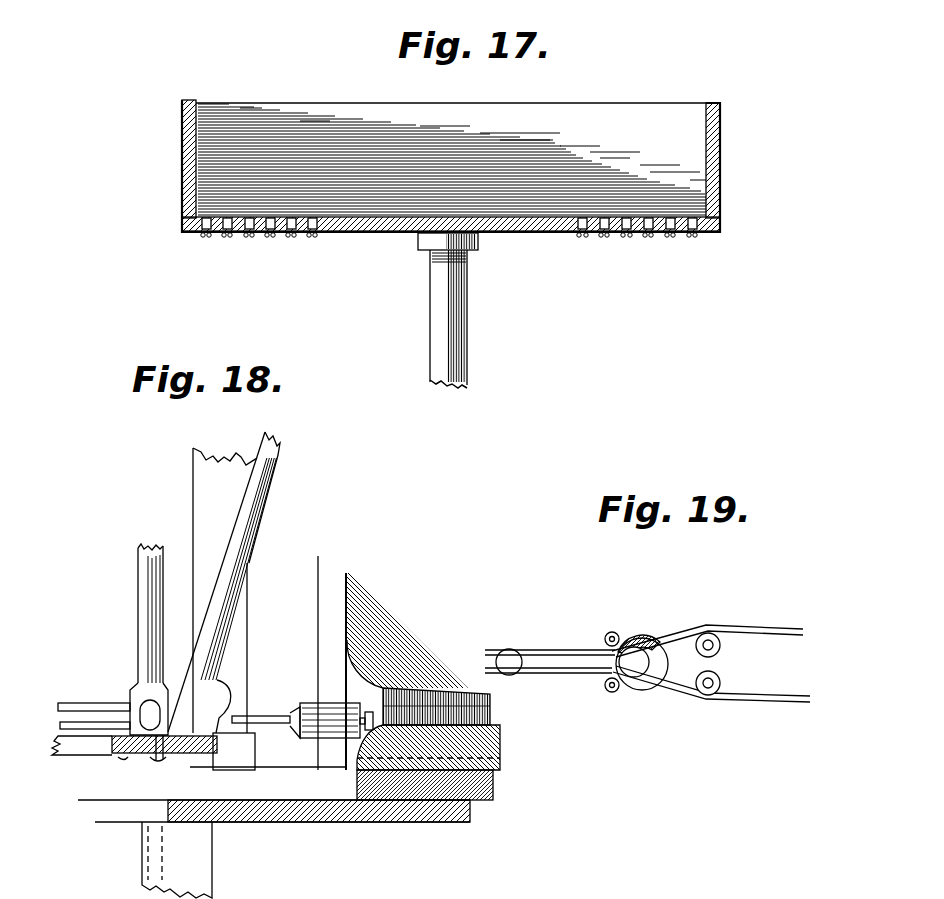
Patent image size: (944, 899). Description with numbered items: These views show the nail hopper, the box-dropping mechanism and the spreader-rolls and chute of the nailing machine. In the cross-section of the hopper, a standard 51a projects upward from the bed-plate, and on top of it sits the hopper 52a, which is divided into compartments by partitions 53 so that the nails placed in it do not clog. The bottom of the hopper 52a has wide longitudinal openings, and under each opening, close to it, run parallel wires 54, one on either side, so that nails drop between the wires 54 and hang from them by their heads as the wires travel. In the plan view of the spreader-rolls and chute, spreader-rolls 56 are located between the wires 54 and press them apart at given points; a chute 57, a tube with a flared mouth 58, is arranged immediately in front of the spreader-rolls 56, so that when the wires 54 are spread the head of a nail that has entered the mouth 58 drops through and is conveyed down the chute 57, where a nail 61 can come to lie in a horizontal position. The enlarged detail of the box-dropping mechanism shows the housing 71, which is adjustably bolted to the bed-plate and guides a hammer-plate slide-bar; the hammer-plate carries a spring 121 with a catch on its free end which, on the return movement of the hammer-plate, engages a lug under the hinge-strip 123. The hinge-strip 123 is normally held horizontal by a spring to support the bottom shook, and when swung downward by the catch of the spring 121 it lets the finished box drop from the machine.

In FIG. 17, the standard 51a is at (456, 327).
In FIG. 17, the hopper 52a is at (722, 162).
In FIG. 17, the partitions 53 is at (452, 159).
In FIG. 17, the parallel wires 54 is at (266, 238).
In FIG. 19, the parallel wires 54 is at (540, 655).
In FIG. 19, the spreader-rolls 56 is at (612, 632).
In FIG. 18, the chutes 57 is at (143, 649).
In FIG. 19, the flared mouths 58 is at (648, 638).
In FIG. 19, the nail in horizontal position 61 is at (503, 652).
In FIG. 18, the housing 71 is at (289, 735).
In FIG. 18, the springs 121 is at (292, 762).
In FIG. 18, the hinge-strips 123 is at (110, 753).